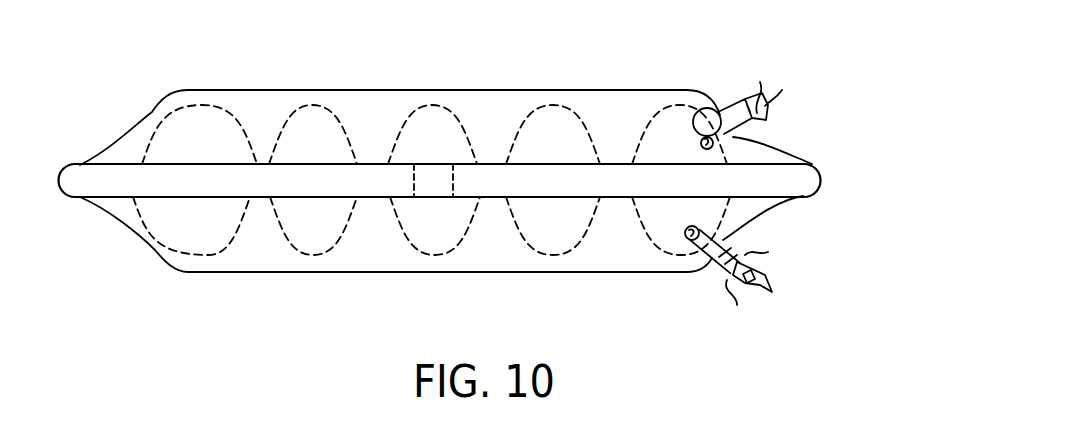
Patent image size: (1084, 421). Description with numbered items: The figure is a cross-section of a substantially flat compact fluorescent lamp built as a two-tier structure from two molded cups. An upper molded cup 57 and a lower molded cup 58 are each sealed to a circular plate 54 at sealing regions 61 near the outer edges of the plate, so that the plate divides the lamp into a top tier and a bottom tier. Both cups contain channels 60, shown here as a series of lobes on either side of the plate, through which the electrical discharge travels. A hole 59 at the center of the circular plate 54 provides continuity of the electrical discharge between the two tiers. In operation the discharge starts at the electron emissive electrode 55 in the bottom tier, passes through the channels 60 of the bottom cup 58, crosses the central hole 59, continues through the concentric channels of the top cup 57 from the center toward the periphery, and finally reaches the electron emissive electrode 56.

The circular plate 54 is at (147, 178).
The electron emissive electrode 55 is at (697, 234).
The electron emissive electrode 56 is at (716, 97).
The molded cup 57 is at (613, 105).
The molded cup 58 is at (500, 260).
The hole 59 is at (430, 180).
The channels 60 is at (430, 120).
The region 61 is at (58, 183).